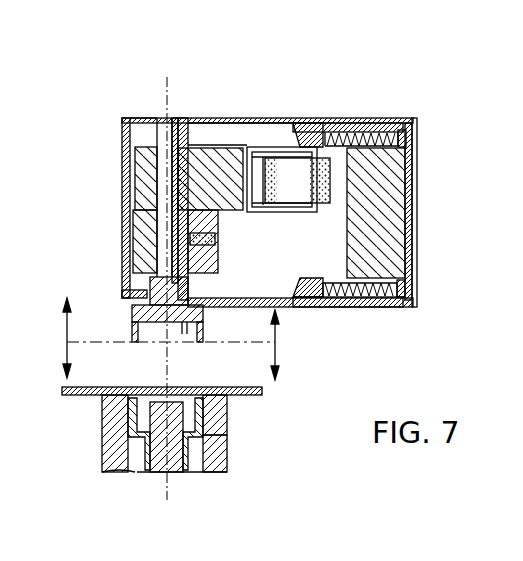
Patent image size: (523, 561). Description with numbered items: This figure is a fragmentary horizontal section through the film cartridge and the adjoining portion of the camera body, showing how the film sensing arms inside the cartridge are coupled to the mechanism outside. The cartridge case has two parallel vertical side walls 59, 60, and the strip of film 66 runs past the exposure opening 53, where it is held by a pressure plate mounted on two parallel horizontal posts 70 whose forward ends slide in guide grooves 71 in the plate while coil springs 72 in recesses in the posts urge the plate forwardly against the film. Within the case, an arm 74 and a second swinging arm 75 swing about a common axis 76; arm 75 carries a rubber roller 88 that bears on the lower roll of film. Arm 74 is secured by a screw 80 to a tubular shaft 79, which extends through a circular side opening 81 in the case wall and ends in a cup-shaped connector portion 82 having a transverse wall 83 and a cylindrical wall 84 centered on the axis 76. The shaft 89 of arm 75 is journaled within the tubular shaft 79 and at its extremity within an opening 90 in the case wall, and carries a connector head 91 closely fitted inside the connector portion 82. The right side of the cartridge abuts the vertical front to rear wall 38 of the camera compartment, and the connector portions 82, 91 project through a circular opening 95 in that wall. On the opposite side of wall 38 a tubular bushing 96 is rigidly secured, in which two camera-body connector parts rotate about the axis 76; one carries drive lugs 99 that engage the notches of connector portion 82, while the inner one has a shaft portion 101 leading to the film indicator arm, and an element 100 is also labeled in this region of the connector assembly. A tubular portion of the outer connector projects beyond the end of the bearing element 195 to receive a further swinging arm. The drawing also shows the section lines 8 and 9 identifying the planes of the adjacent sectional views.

The vertical front to rear wall 38 is at (254, 392).
The exposure opening 53 is at (413, 205).
The side wall 59 is at (272, 119).
The side wall 60 is at (345, 307).
The strip of film 66 is at (407, 163).
The posts 70 is at (213, 131).
The guide grooves 71 is at (377, 280).
The coil springs 72 is at (367, 135).
The arm 74 is at (218, 262).
The second swinging arm 75 is at (243, 206).
The common axis 76 is at (167, 90).
The tubular shaft 79 is at (145, 230).
The screw 80 is at (215, 241).
The circular side opening 81 is at (135, 290).
The connector portion 82 is at (132, 330).
The transverse wall 83 is at (132, 309).
The cylindrical wall 84 is at (204, 327).
The rubber roller 88 is at (293, 168).
The shaft 89 is at (150, 127).
The opening 90 is at (174, 118).
The connector head 91 is at (184, 326).
The circular opening 95 is at (199, 405).
The tubular bushing 96 is at (228, 418).
The drive lugs 99 is at (103, 419).
The left sleeve 100 is at (152, 402).
The shaft portion 101 is at (168, 471).
The bearing element 195 is at (228, 447).
The section line 8- 8 is at (169, 320).
The section line 9- 9 is at (169, 363).